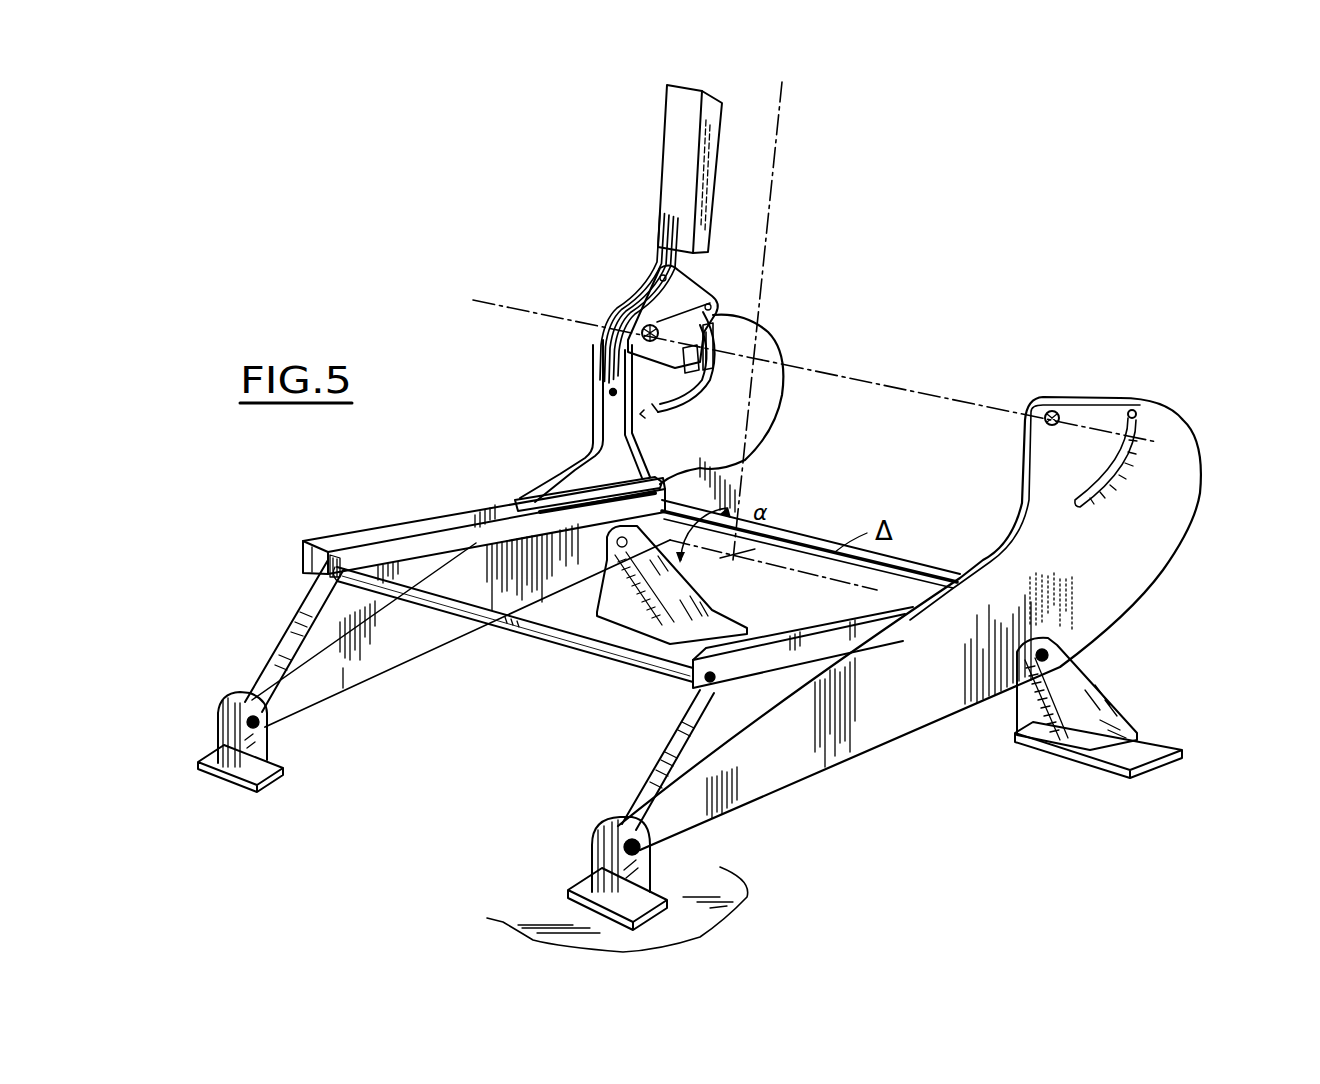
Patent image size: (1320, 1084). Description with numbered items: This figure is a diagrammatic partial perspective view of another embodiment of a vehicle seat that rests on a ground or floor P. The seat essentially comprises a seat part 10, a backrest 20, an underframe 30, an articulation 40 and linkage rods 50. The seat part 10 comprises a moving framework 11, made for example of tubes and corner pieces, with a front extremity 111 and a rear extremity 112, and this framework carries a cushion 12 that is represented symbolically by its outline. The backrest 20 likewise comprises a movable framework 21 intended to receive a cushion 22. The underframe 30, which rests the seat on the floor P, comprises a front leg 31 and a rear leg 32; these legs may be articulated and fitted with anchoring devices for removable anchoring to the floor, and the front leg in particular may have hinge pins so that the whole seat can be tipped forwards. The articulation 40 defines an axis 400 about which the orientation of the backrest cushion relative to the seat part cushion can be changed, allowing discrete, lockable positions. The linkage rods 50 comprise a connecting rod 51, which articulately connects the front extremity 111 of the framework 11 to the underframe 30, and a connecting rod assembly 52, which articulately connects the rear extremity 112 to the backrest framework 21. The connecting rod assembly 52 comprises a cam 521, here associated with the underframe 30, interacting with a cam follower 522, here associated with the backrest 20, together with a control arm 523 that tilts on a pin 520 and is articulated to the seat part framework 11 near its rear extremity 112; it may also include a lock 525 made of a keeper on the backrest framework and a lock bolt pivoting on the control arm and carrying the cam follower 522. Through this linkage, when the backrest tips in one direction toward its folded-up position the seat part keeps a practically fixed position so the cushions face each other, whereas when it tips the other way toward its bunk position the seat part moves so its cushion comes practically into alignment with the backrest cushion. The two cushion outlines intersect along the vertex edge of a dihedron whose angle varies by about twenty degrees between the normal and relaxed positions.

The seat part 10 is at (587, 591).
The moving framework 11 is at (400, 530).
The front extremity 111 is at (300, 562).
The rear extremity 112 is at (745, 449).
The cushion 12 is at (593, 583).
The backrest 20 is at (637, 169).
The movable framework 21 is at (667, 128).
The cushion 22 is at (778, 120).
The underframe 30 is at (941, 623).
The front leg 31 is at (640, 876).
The rear leg 32 is at (1107, 765).
The articulation 40 is at (593, 280).
The axis 400 is at (492, 299).
The linkage rods 50 is at (656, 371).
The connecting rod 51 is at (298, 627).
The connecting rod assembly 52 is at (737, 270).
The pin 520 is at (641, 334).
The cam 521 is at (1127, 467).
The cam follower 522 is at (695, 362).
The control arm 523 is at (617, 457).
The lock 525 is at (722, 338).
The ground or floor P is at (748, 898).